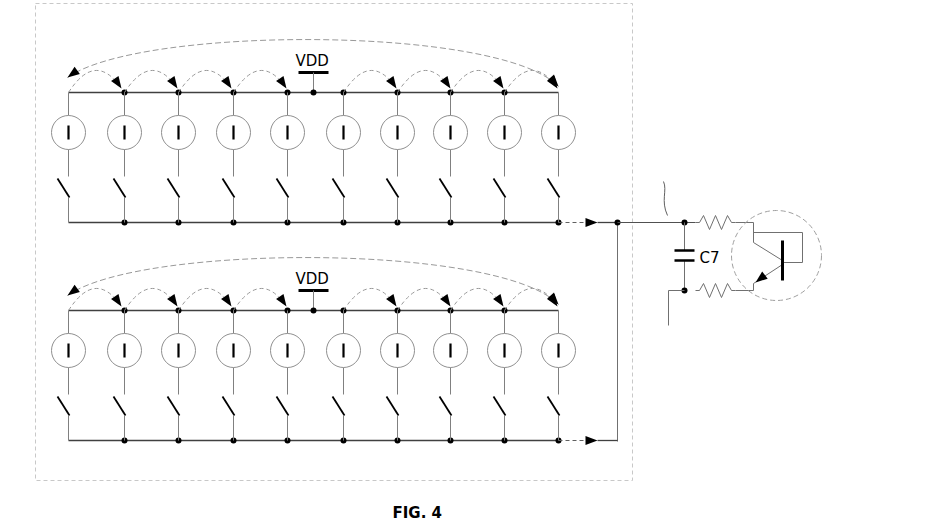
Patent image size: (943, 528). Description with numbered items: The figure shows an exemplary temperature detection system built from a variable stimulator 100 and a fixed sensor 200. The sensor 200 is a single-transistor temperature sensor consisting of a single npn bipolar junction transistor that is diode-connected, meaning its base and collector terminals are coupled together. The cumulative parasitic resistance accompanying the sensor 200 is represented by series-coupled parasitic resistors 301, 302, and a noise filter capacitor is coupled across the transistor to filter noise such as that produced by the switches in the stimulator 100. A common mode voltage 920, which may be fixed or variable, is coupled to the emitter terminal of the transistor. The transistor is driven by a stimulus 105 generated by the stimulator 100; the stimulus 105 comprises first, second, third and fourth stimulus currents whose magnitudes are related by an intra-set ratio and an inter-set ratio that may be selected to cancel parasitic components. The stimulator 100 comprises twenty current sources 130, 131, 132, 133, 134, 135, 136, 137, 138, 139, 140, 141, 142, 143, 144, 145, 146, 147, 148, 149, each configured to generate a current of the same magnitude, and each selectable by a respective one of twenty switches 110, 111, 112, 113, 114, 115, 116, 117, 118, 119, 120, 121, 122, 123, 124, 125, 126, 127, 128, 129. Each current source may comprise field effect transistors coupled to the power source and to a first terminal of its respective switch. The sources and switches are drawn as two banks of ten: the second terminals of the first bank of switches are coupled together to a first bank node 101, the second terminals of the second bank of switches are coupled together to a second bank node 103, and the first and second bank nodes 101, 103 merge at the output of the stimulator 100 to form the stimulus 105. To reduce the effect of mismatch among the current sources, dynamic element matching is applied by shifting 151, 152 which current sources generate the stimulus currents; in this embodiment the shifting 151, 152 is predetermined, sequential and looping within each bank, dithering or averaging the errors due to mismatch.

The stimulator 100 is at (613, 31).
The first bank node 101 is at (581, 224).
The second bank node 103 is at (578, 443).
The stimulus 105 is at (646, 225).
The switch 110 is at (81, 201).
The switch 111 is at (137, 201).
The switch 112 is at (191, 201).
The switch 113 is at (246, 201).
The switch 114 is at (300, 201).
The switch 115 is at (356, 201).
The switch 116 is at (410, 201).
The switch 117 is at (463, 201).
The switch 118 is at (517, 201).
The switch 119 is at (571, 201).
The switch 120 is at (81, 419).
The switch 121 is at (137, 419).
The switch 122 is at (191, 419).
The switch 123 is at (246, 419).
The switch 124 is at (300, 419).
The switch 125 is at (356, 419).
The switch 126 is at (410, 419).
The switch 127 is at (463, 419).
The switch 128 is at (517, 419).
The switch 129 is at (571, 419).
The current source 130 is at (79, 135).
The current source 131 is at (135, 135).
The current source 132 is at (189, 135).
The current source 133 is at (244, 135).
The current source 134 is at (298, 135).
The current source 135 is at (354, 135).
The current source 136 is at (408, 135).
The current source 137 is at (461, 135).
The current source 138 is at (515, 135).
The current source 139 is at (569, 135).
The current source 140 is at (79, 353).
The current source 141 is at (135, 353).
The current source 142 is at (189, 353).
The current source 143 is at (244, 353).
The current source 144 is at (298, 353).
The current source 145 is at (354, 353).
The current source 146 is at (408, 353).
The current source 147 is at (461, 353).
The current source 148 is at (515, 353).
The current source 149 is at (569, 353).
The shifting 151 is at (193, 75).
The shifting 152 is at (193, 293).
The sensor 200 is at (773, 210).
The parasitic resistor 301 is at (725, 212).
The parasitic resistor 302 is at (725, 304).
The common mode voltage Vcm 920 is at (669, 329).